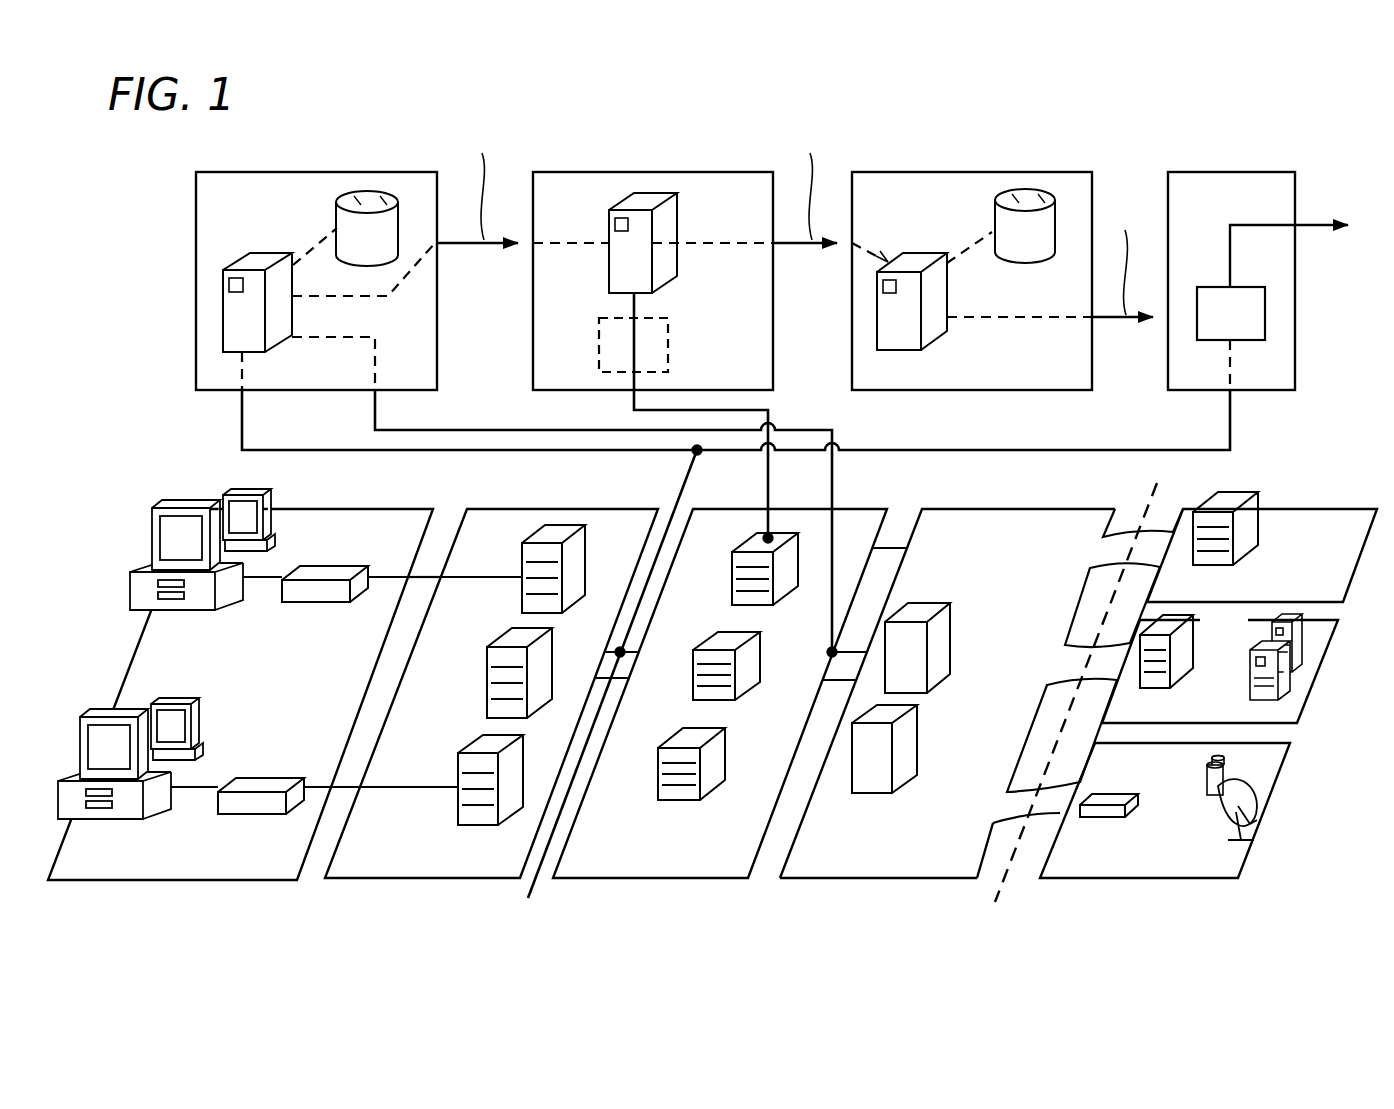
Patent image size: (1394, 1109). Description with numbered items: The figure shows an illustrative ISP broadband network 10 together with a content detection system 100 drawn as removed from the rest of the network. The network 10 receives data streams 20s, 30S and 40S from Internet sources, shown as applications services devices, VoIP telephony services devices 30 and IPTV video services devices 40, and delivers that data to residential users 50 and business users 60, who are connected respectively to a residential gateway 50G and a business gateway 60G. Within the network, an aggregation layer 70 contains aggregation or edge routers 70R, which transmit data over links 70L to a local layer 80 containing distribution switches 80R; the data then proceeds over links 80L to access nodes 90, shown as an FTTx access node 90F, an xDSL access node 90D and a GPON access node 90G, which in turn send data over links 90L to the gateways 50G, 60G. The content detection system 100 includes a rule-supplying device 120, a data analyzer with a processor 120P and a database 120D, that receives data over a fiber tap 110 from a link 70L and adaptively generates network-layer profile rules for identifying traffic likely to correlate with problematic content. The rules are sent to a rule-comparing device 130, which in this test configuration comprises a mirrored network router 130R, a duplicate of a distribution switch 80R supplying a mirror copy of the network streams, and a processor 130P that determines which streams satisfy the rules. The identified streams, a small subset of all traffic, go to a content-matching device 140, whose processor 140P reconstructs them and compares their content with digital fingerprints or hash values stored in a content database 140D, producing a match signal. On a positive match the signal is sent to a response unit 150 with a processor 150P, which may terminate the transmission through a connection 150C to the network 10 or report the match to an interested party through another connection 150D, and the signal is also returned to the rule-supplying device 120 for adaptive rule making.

The content detection system 100 is at (156, 199).
The rule-supplying device 120 is at (303, 170).
The processor 120P is at (224, 313).
The database 120D is at (337, 213).
The rule-comparing device 130 is at (660, 170).
The processor 130P is at (680, 221).
The mirrored network router 130R is at (668, 345).
The content-matching device 140 is at (960, 170).
The processor 140P is at (935, 330).
The content database 140D is at (992, 208).
The response unit 150 is at (1227, 170).
The processor 150P is at (1255, 315).
The connection 150D is at (1330, 222).
The connection 150C is at (684, 472).
The fiber tap 110 is at (483, 428).
The ISP broadband network 10 is at (131, 497).
The residential users 50 is at (176, 503).
The residential gateway 50G is at (340, 563).
The business users 60 is at (93, 713).
The business gateway 60G is at (280, 777).
The access nodes 90 is at (421, 887).
The links 90L is at (430, 577).
The FTTx access node 90F is at (557, 535).
The xDSL access node 90D is at (542, 680).
The GPON access node 90G is at (458, 770).
The local layer 80 is at (649, 884).
The links 80L is at (540, 866).
The distribution switches 80R is at (715, 643).
The aggregation layer 70 is at (876, 884).
The links 70L is at (893, 548).
The aggregation routers 70R is at (910, 733).
The data stream 20s is at (1107, 534).
The data stream 30S is at (1060, 641).
The data stream 40S is at (1014, 790).
The IPTV video services devices 40 is at (1253, 522).
The VoIP telephony services devices 30 is at (1187, 648).